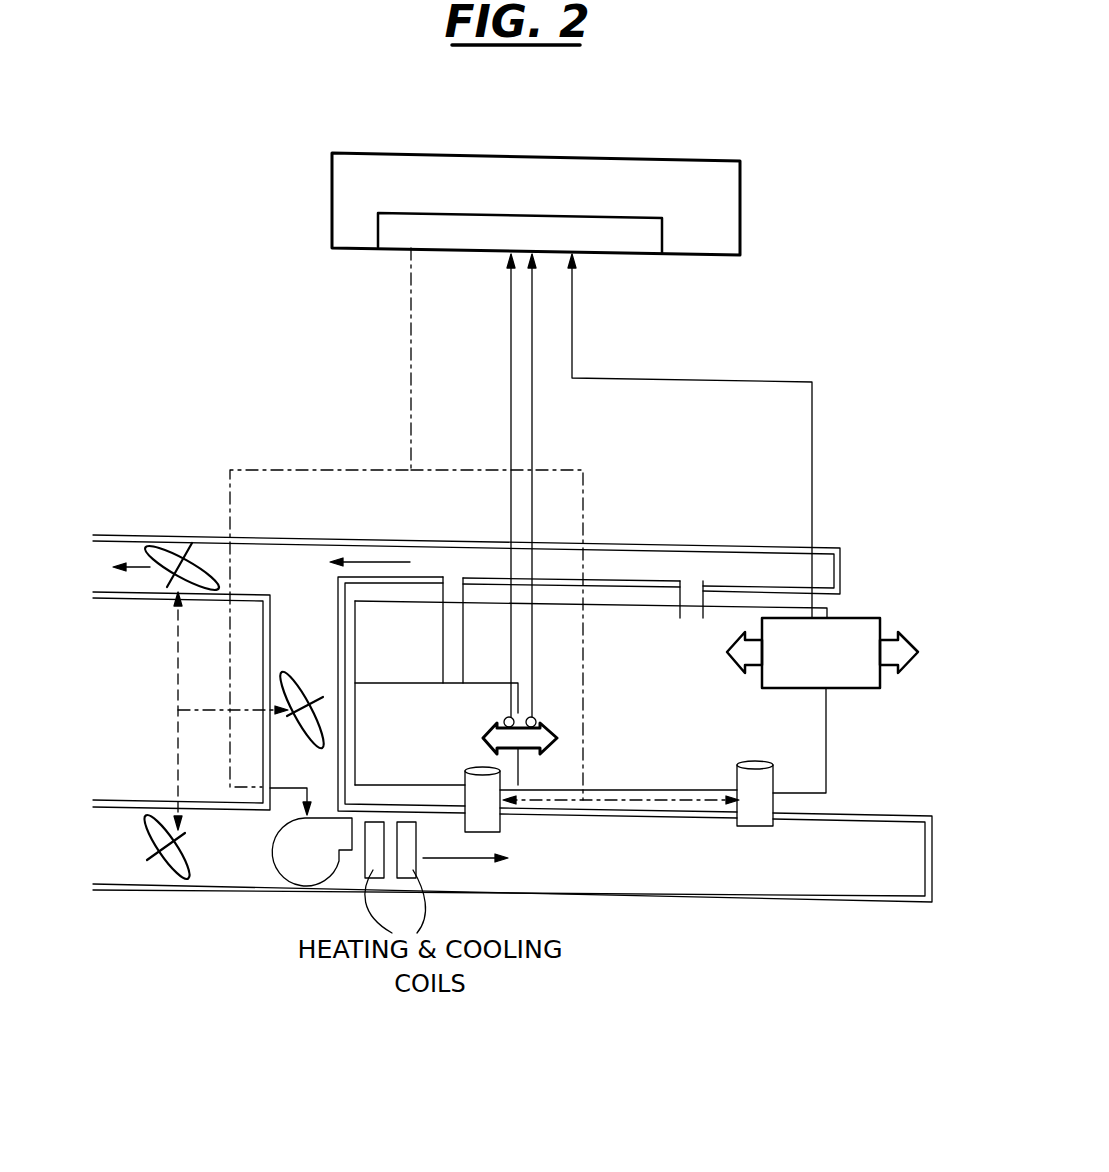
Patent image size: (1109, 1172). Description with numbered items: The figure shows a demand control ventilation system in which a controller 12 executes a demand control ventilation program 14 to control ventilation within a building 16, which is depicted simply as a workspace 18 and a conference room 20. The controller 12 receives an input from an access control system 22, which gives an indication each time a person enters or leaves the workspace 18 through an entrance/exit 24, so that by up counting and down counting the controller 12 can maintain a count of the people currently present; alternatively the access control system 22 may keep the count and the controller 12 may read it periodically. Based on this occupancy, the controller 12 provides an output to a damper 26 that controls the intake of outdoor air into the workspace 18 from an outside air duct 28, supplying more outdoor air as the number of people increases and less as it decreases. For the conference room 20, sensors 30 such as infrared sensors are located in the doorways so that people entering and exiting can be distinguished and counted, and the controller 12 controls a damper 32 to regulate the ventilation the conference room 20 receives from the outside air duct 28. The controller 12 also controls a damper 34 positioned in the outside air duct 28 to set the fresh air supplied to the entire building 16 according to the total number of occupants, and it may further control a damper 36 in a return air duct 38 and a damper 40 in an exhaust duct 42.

The controller 12 is at (740, 201).
The demand control ventilation program 14 is at (643, 243).
The building 16 is at (827, 758).
The workspace 18 is at (723, 625).
The conference room 20 is at (377, 707).
The access control system 22 is at (838, 623).
The entrance/exit 24 is at (864, 508).
The damper 26 is at (758, 828).
The outside air duct 28 is at (863, 877).
The sensors 30 is at (518, 713).
The damper 32 is at (485, 818).
The damper 34 is at (158, 877).
The damper 36 is at (285, 690).
The return air duct 38 is at (603, 563).
The damper 40 is at (200, 568).
The exhaust duct 42 is at (128, 550).